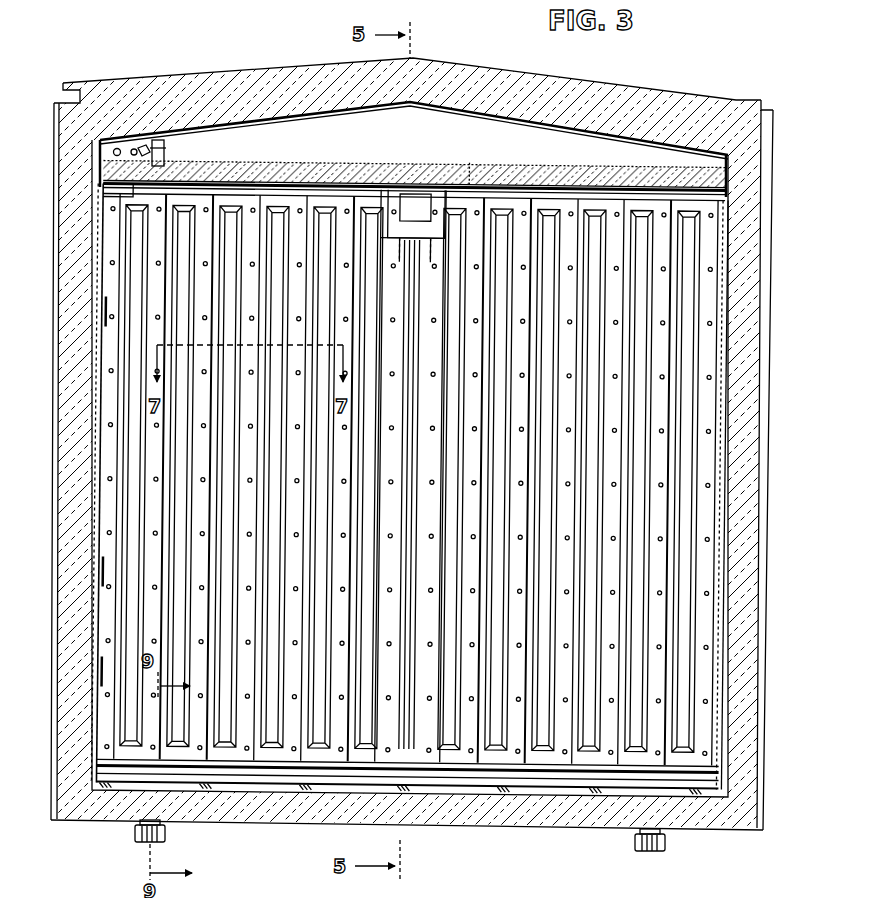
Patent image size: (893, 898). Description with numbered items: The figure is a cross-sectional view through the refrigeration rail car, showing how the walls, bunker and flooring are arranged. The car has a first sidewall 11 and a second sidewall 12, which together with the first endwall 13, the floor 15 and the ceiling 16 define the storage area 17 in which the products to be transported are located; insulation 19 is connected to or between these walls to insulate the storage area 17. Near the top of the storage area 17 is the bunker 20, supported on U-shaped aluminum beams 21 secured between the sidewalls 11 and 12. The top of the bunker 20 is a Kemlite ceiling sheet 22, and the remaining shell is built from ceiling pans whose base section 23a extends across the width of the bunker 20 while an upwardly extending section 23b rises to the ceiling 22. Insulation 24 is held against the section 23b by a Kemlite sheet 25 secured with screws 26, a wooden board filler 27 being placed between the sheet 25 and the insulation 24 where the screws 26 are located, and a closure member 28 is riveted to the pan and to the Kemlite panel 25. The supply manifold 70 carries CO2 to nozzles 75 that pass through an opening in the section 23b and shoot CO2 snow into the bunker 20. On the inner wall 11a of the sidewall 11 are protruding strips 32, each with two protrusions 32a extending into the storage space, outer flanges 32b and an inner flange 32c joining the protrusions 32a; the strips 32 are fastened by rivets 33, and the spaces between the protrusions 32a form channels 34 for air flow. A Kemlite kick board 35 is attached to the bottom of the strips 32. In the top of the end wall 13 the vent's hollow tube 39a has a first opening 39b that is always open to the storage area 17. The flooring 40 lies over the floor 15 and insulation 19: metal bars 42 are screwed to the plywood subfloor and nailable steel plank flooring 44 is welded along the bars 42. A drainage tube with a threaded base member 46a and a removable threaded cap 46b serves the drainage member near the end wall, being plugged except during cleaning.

The first sidewall 11 is at (62, 355).
The inner wall 11a is at (108, 580).
The second sidewall 12 is at (759, 375).
The first endwall 13 is at (473, 464).
The floor 15 is at (545, 822).
The ceiling 16 is at (656, 90).
The storage area 17 is at (285, 750).
The insulation 19 is at (594, 100).
The bunker 20 is at (508, 104).
The U-shaped aluminum beams 21 is at (112, 168).
The ceiling sheet 22 is at (413, 108).
The base section 23a is at (373, 162).
The upwardly extending section 23b is at (172, 140).
The insulation 24 is at (585, 180).
The Kemlite sheet 25 is at (583, 205).
The screws 26 is at (300, 164).
The wooden board filler 27 is at (468, 175).
The closure member 28 is at (140, 185).
The protruding strips 32 is at (262, 200).
The protrusions 32a is at (108, 460).
The flanges 32b is at (290, 558).
The inner flange 32c is at (252, 505).
The rivets 33 is at (283, 313).
The channels 34 is at (290, 432).
The kick board 35 is at (105, 672).
The hollow tube 39a is at (395, 200).
The first opening 39b is at (432, 200).
The flooring 40 is at (560, 745).
The metal bars 42 is at (305, 790).
The nailable steel plank flooring 44 is at (375, 777).
The threaded base member 46a is at (135, 830).
The removable threaded cap 46b is at (665, 845).
The supply manifold 70 is at (122, 146).
The nozzles 75 is at (160, 152).